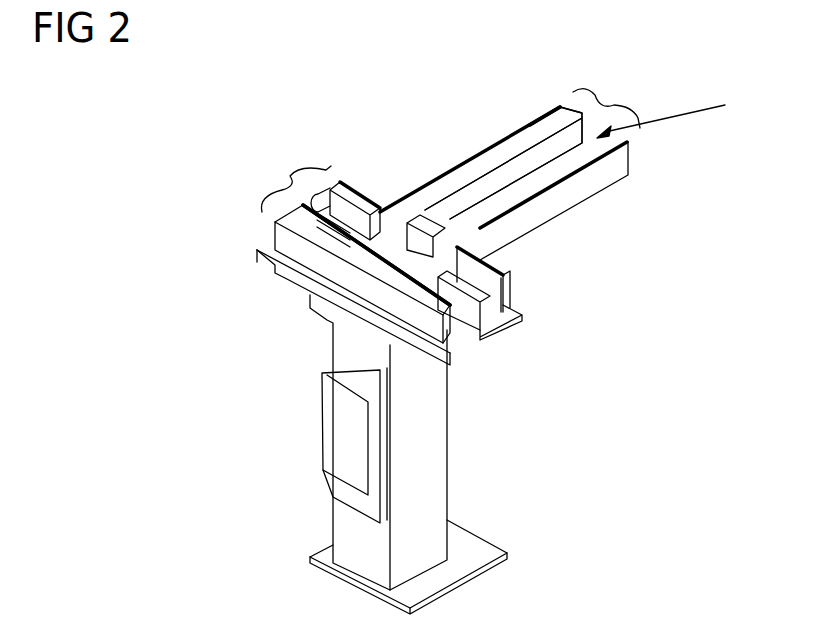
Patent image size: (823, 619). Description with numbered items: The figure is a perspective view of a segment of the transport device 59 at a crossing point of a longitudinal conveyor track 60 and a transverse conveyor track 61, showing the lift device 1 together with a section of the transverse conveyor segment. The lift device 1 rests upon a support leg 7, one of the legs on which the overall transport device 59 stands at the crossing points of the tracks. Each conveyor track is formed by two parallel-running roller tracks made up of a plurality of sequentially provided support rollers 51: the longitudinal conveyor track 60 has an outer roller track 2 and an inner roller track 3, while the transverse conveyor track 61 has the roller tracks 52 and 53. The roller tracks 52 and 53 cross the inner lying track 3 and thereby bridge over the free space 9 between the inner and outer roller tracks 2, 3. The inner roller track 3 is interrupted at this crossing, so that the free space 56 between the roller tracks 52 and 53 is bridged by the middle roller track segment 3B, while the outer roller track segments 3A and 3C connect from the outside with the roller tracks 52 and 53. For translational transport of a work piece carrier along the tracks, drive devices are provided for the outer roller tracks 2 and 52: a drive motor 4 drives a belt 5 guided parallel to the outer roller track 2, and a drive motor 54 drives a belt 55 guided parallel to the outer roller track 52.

The lift device 1 is at (413, 315).
The outer roller track 2 is at (470, 350).
The inner roller track 3 is at (512, 296).
The outer roller track segment 3A is at (470, 264).
The middle roller track segment 3B is at (420, 238).
The outer roller track segment 3C is at (357, 180).
The drive motor 4 is at (318, 206).
The belt 5 is at (377, 247).
The support leg 7 is at (427, 480).
The free space 9 is at (470, 328).
The support rollers 51 is at (537, 116).
The outer roller track 52 is at (561, 106).
The roller track 53 is at (630, 170).
The drive motor 54 is at (375, 248).
The belt 55 is at (573, 110).
The free space 56 is at (686, 108).
The transport device 59 is at (323, 138).
The longitudinal conveyor track 60 is at (283, 180).
The transverse conveyor track 61 is at (613, 103).